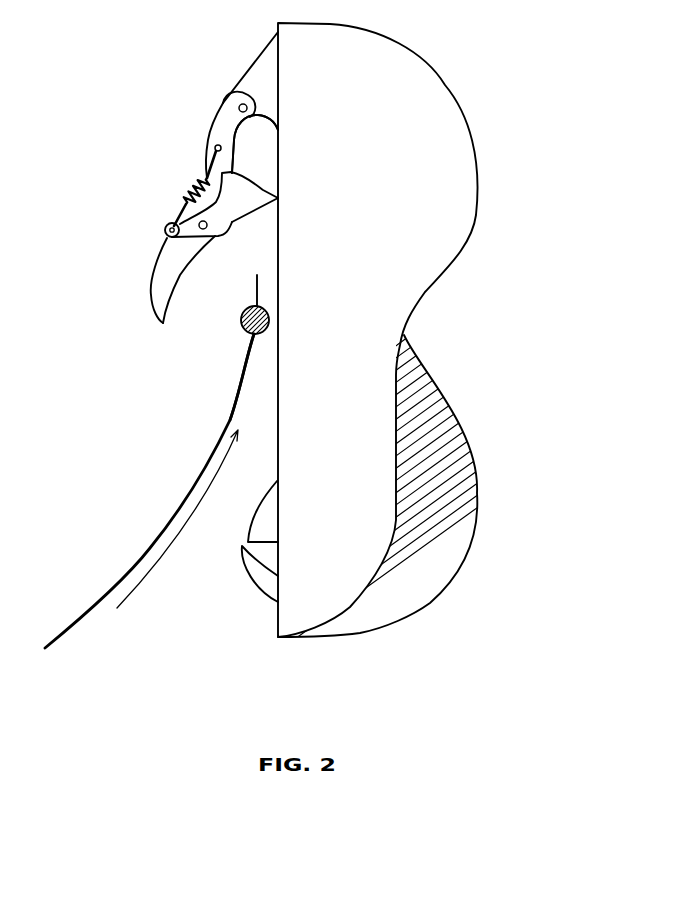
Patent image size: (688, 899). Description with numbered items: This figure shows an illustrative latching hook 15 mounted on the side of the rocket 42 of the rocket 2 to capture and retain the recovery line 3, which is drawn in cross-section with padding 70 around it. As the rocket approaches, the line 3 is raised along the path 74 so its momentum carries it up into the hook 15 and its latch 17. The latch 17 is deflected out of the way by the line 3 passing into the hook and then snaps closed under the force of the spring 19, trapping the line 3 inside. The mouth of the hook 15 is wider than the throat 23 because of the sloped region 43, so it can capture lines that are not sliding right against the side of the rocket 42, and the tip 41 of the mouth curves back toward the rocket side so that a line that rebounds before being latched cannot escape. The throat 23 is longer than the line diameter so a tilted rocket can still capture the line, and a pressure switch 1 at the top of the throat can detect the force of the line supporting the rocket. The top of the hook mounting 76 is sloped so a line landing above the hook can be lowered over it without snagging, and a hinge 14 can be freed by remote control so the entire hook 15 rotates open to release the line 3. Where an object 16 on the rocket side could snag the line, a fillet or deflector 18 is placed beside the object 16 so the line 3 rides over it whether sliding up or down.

The rocket 2 is at (457, 98).
The hook mounting top 76 is at (261, 55).
The hinge 14 is at (255, 102).
The pressure switch 1 is at (268, 117).
The throat 23 is at (258, 152).
The latching hook 15 is at (209, 137).
The spring 19 is at (186, 189).
The latch 17 is at (255, 210).
The sloped region 43 is at (187, 265).
The tip 41 is at (160, 313).
The recovery line 3 is at (243, 323).
The padding 70 is at (247, 333).
The path 74 is at (172, 520).
The side of the rocket 42 is at (278, 473).
The object 16 is at (257, 522).
The deflector 18 is at (250, 580).